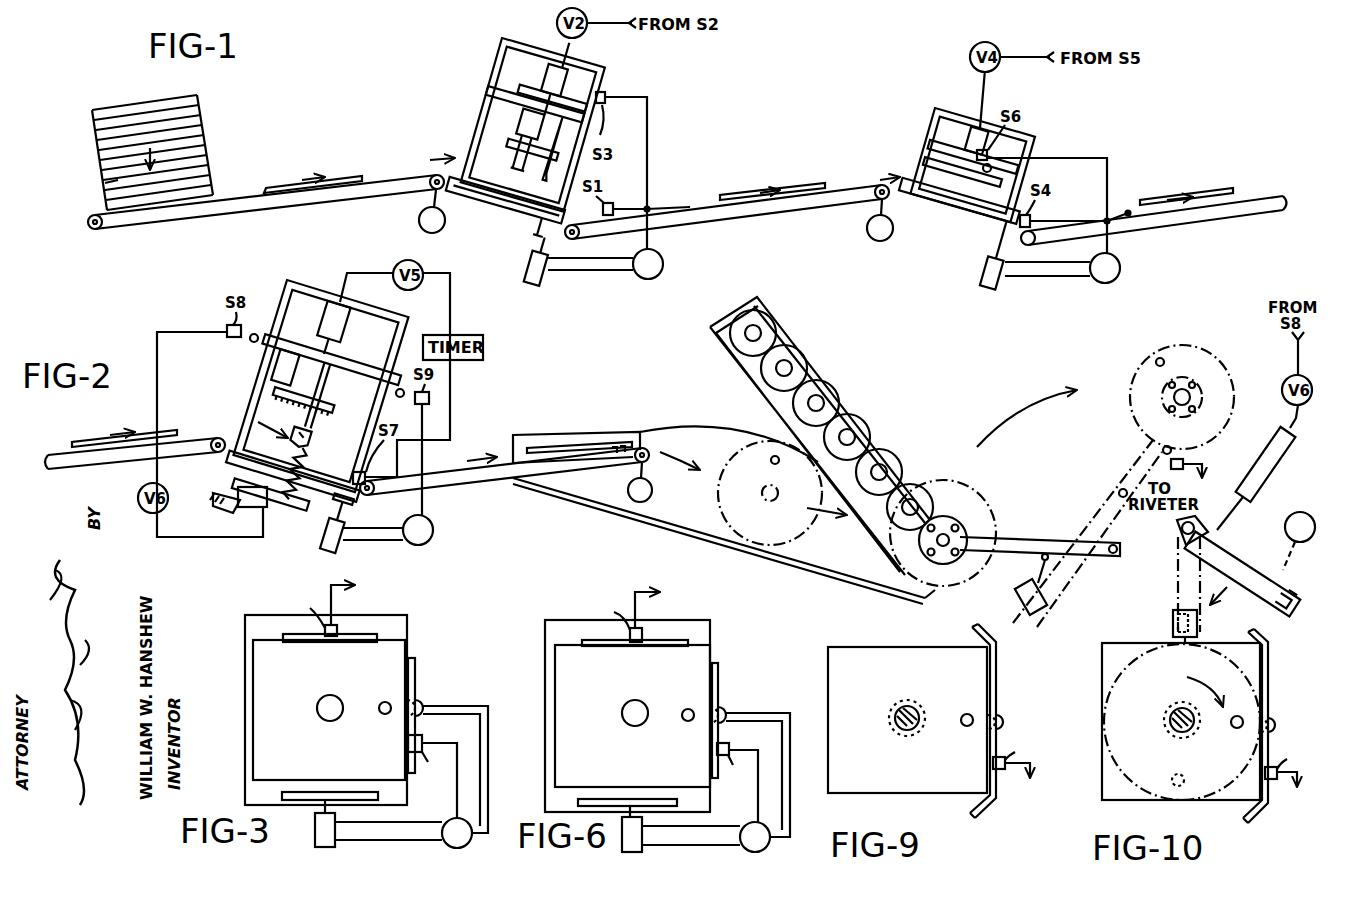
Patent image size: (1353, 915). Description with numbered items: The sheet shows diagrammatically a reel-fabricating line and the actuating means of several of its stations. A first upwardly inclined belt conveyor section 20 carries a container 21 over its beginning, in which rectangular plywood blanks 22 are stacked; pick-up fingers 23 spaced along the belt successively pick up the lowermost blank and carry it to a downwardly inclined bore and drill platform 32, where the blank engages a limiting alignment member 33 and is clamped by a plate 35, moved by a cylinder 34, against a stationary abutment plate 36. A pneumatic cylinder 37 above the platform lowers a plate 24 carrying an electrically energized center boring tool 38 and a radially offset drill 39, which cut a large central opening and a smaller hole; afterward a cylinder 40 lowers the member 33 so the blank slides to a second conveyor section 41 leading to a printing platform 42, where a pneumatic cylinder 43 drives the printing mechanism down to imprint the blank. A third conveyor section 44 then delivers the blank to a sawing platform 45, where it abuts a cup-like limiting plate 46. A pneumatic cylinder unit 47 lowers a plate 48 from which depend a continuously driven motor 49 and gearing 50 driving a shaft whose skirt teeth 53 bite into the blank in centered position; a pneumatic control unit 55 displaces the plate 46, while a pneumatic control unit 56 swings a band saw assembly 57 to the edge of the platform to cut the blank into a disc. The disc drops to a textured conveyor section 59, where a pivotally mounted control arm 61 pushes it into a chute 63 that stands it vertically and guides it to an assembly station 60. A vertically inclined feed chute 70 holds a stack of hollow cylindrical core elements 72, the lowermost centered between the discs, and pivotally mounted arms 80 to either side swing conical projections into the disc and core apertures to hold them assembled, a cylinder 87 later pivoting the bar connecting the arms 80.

In FIG. 1, the belt conveyor section 20 is at (237, 215).
In FIG. 1, the container 21 is at (95, 150).
In FIG. 1, the plywood blank 22 is at (112, 186).
In FIG. 2, the plywood blank 22 is at (318, 470).
In FIG. 3, the plywood blank 22 is at (311, 690).
In FIG. 6, the plywood blank 22 is at (593, 693).
In FIG. 9, the plywood blank 22 is at (880, 700).
In FIG. 10, the plywood blank 22 is at (1150, 702).
In FIG. 1, the pick-up fingers 23 is at (265, 190).
In FIG. 1, the plate 24 is at (482, 84).
In FIG. 1, the bore and drill platform 32 is at (492, 210).
In FIG. 3, the bore and drill platform 32 is at (243, 636).
In FIG. 1, the limiting alignment member 33 is at (548, 225).
In FIG. 3, the limiting alignment member 33 is at (418, 672).
In FIG. 3, the cylinder 34 is at (316, 828).
In FIG. 3, the plate 35 is at (352, 792).
In FIG. 3, the abutment plate 36 is at (368, 643).
In FIG. 1, the pneumatic cylinder 37 is at (545, 70).
In FIG. 1, the center boring tool 38 is at (505, 165).
In FIG. 1, the drill 39 is at (575, 177).
In FIG. 1, the cylinder 40 is at (528, 265).
In FIG. 3, the cylinder 40 is at (418, 706).
In FIG. 1, the conveyor section 41 is at (762, 220).
In FIG. 1, the printing platform 42 is at (940, 210).
In FIG. 6, the printing platform 42 is at (543, 640).
In FIG. 1, the pneumatic cylinder 43 is at (972, 142).
In FIG. 1, the conveyor belt section 44 is at (1213, 222).
In FIG. 2, the conveyor belt section 44 is at (132, 462).
In FIG. 2, the sawing platform 45 is at (320, 490).
In FIG. 9, the limiting plate 46 is at (997, 670).
In FIG. 10, the limiting plate 46 is at (1270, 658).
In FIG. 2, the pneumatic cylinder unit 47 is at (336, 292).
In FIG. 2, the plate 48 is at (358, 362).
In FIG. 2, the motor 49 is at (290, 355).
In FIG. 2, the gearing 50 is at (332, 412).
In FIG. 9, the teeth 53 is at (922, 708).
In FIG. 10, the teeth 53 is at (1166, 730).
In FIG. 2, the pneumatic control unit 55 is at (328, 545).
In FIG. 9, the pneumatic control unit 55 is at (996, 718).
In FIG. 10, the pneumatic control unit 55 is at (1270, 723).
In FIG. 2, the pneumatic control unit 56 is at (258, 485).
In FIG. 2, the band saw assembly 57 is at (286, 502).
In FIG. 2, the conveyor section 59 is at (476, 488).
In FIG. 2, the assembly station 60 is at (893, 590).
In FIG. 2, the control arm 61 is at (598, 440).
In FIG. 2, the chute 63 is at (672, 432).
In FIG. 2, the feed chute 70 is at (790, 332).
In FIG. 2, the core element 72 is at (810, 388).
In FIG. 2, the arm 80 is at (1030, 540).
In FIG. 2, the cylinder 87 is at (1052, 600).